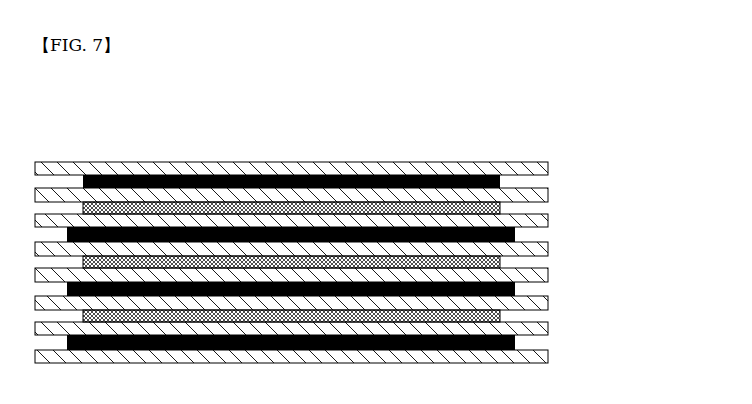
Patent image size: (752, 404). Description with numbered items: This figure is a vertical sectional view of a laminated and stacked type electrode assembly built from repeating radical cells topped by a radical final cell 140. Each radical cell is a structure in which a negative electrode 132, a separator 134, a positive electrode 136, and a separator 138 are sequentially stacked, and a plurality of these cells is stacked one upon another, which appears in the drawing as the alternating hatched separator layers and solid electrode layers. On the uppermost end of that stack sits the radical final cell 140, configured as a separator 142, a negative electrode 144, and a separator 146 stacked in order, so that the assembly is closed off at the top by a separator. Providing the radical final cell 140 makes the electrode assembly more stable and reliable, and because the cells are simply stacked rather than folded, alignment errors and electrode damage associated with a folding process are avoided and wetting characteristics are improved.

The radical final cell 140 is at (360, 170).
The separator 146 is at (548, 171).
The negative electrode 144 is at (500, 182).
The separator 142 is at (548, 198).
The negative electrode 132 is at (500, 316).
The separator 134 is at (548, 326).
The positive electrode 136 is at (515, 341).
The separator 138 is at (548, 357).